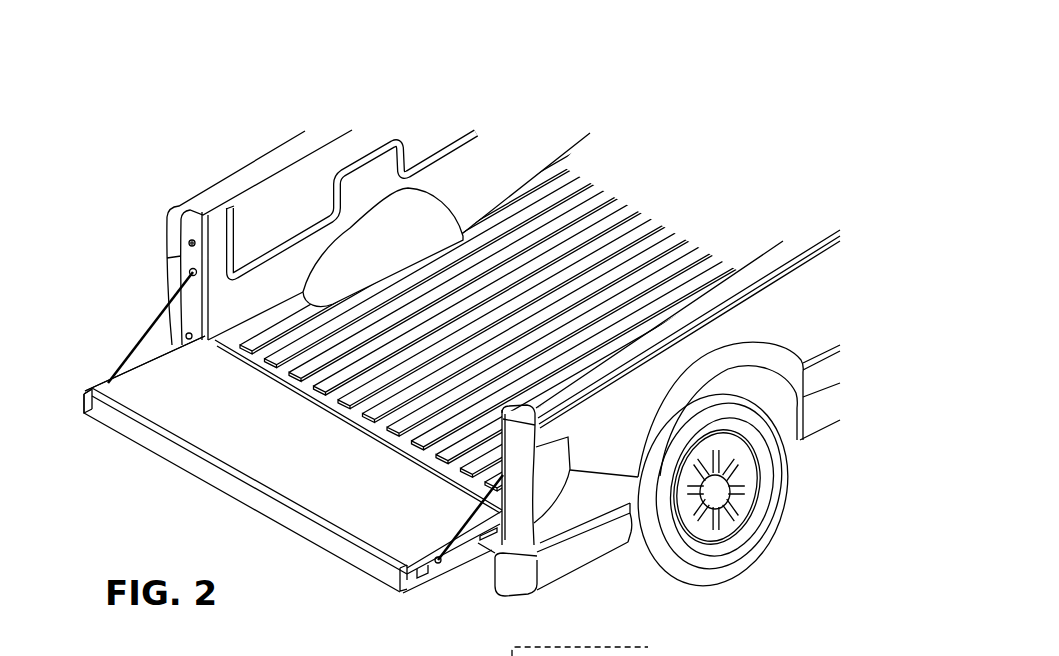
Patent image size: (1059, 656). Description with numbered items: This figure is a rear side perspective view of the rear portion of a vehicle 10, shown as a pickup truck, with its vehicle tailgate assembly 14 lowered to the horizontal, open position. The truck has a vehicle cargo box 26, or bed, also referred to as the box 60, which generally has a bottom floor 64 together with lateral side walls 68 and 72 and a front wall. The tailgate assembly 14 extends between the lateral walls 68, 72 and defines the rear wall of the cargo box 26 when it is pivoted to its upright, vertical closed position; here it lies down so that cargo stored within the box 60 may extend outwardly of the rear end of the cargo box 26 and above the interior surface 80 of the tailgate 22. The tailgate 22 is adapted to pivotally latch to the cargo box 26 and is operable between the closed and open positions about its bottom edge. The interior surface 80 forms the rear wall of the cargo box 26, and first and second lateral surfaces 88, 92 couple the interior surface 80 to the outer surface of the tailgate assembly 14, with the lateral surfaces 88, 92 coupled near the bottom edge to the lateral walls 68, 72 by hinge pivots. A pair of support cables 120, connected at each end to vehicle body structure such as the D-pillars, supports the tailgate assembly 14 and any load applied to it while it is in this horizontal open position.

The vehicle 10 is at (598, 163).
The vehicle tailgate assembly 14 is at (112, 362).
The tailgate 22 is at (361, 562).
The vehicle cargo box 26 is at (450, 160).
The box 60 is at (559, 92).
The bottom floor 64 is at (702, 285).
The lateral side wall 68 is at (290, 214).
The lateral side wall 72 is at (624, 414).
The interior surface 80 is at (312, 476).
The first lateral surface 88 is at (113, 378).
The second lateral surface 92 is at (462, 548).
The support cables 120 is at (150, 328).